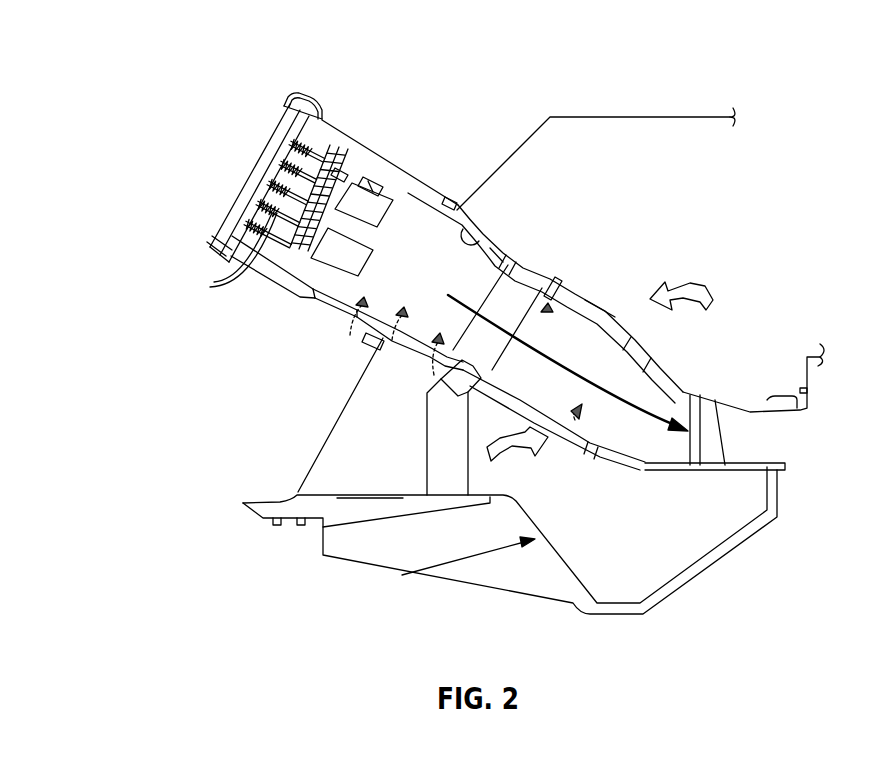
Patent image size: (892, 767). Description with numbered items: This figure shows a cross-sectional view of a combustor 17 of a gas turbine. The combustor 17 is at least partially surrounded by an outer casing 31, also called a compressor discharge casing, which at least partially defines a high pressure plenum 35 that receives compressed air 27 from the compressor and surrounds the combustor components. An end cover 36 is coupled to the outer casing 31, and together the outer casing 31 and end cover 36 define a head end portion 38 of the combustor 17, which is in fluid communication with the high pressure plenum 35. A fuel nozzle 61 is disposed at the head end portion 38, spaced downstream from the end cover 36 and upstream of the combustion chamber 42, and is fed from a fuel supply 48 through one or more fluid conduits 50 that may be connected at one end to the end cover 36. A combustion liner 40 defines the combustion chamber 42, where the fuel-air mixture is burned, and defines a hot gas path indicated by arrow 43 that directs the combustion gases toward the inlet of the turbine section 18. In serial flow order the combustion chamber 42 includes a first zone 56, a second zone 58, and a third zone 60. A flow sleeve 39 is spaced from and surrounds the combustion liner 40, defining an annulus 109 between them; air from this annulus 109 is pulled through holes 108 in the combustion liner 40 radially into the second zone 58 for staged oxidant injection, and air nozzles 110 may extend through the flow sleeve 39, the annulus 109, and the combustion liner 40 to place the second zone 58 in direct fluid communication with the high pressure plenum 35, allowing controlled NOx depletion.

The combustor 17 is at (582, 80).
The turbine section 18 is at (785, 444).
The compressed air 27 is at (559, 283).
The outer casing 31 is at (507, 161).
The high pressure plenum 35 is at (681, 191).
The end cover 36 is at (207, 248).
The head end portion 38 is at (277, 264).
The flow sleeve 39 is at (603, 317).
The combustion liner 40 is at (483, 250).
The combustion chamber 42 is at (407, 261).
The hot gas path 43 is at (560, 372).
The fuel supply 48 is at (248, 173).
The fluid conduit 50 is at (210, 287).
The first zone 56 is at (352, 317).
The second zone 58 is at (454, 427).
The third zone 60 is at (642, 446).
The fuel nozzle 61 is at (280, 265).
The holes 108 is at (373, 341).
The annulus 109 is at (500, 257).
The air nozzle 110 is at (562, 291).